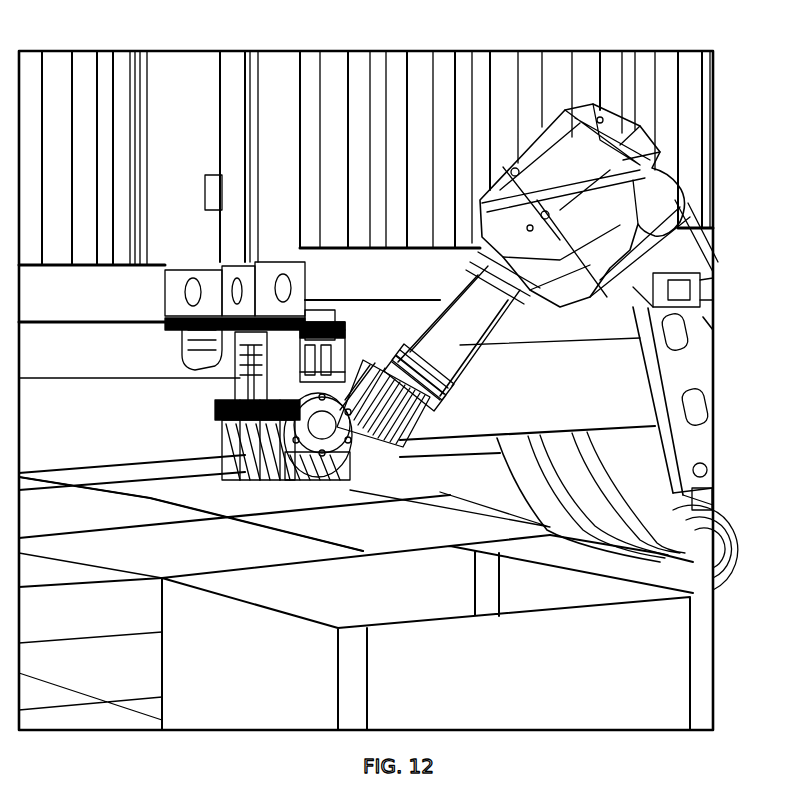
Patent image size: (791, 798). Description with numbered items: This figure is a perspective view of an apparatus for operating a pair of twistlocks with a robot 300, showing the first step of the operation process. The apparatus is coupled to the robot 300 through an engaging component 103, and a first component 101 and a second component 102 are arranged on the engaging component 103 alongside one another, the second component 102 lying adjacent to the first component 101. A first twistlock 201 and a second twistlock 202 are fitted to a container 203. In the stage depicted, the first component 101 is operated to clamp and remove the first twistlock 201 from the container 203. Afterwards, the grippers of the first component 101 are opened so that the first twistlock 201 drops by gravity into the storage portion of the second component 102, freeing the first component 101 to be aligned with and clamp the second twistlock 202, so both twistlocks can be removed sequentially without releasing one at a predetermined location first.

The first component 101 is at (333, 347).
The second component 102 is at (240, 432).
The engaging component 103 is at (290, 470).
The first twistlock 201 is at (315, 323).
The second twistlock 202 is at (183, 342).
The container 203 is at (105, 65).
The robot 300 is at (693, 377).